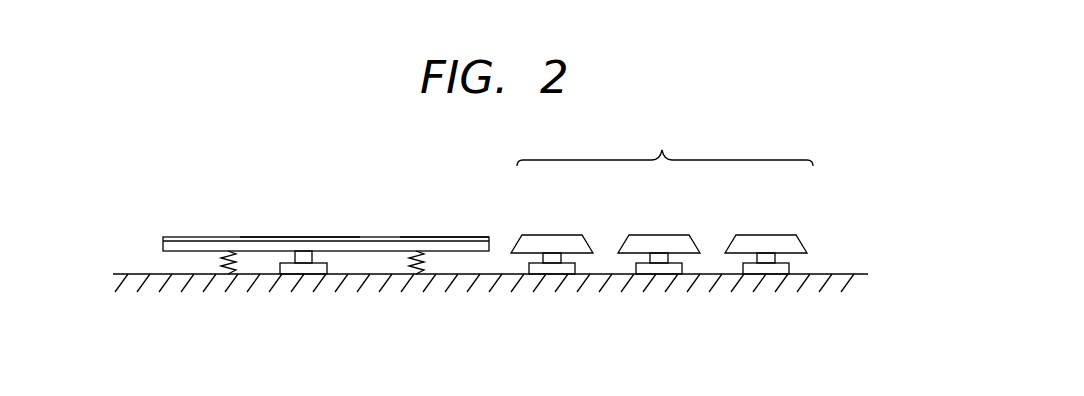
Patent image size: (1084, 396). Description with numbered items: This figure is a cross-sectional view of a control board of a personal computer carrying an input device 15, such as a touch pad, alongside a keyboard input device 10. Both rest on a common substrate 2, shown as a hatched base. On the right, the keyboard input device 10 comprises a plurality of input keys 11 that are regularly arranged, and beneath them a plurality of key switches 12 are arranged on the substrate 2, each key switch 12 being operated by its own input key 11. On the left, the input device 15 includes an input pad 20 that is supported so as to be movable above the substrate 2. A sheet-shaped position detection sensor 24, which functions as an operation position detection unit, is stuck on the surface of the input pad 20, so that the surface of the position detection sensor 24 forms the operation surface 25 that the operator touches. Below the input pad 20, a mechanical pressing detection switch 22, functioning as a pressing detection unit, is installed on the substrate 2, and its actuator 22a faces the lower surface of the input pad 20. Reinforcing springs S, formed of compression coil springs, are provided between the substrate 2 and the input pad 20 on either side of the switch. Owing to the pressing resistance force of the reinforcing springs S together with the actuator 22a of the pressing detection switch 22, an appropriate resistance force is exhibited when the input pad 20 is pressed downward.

The substrate 2 is at (843, 279).
The keyboard input device 10 is at (662, 238).
The input key 11 is at (565, 238).
The key switch 12 is at (547, 271).
The input device 15 is at (316, 244).
The input pad 20 is at (182, 245).
The mechanical pressing detection switch 22 is at (300, 305).
The actuator 22a is at (293, 257).
The position detection sensor 24 is at (303, 237).
The operation surface 25 is at (457, 237).
The reinforcing spring S is at (238, 262).